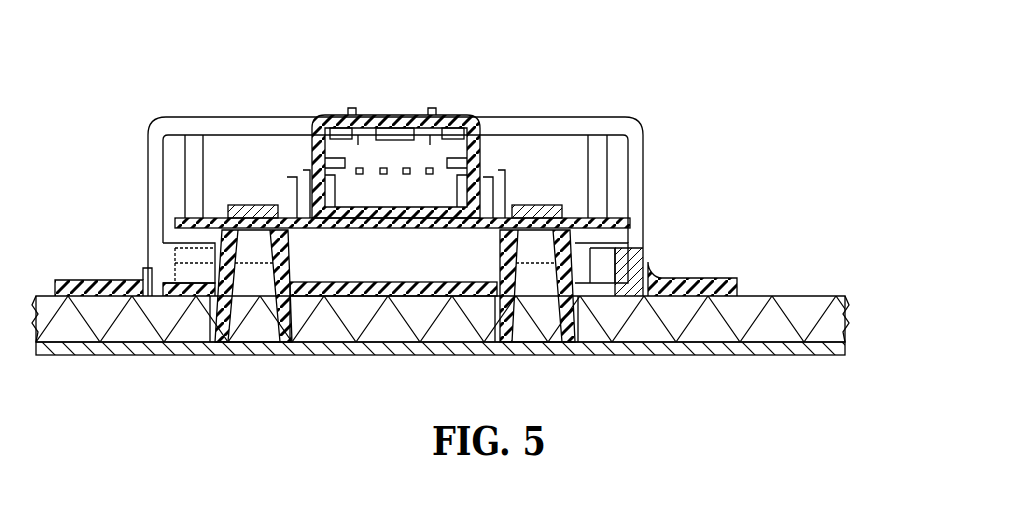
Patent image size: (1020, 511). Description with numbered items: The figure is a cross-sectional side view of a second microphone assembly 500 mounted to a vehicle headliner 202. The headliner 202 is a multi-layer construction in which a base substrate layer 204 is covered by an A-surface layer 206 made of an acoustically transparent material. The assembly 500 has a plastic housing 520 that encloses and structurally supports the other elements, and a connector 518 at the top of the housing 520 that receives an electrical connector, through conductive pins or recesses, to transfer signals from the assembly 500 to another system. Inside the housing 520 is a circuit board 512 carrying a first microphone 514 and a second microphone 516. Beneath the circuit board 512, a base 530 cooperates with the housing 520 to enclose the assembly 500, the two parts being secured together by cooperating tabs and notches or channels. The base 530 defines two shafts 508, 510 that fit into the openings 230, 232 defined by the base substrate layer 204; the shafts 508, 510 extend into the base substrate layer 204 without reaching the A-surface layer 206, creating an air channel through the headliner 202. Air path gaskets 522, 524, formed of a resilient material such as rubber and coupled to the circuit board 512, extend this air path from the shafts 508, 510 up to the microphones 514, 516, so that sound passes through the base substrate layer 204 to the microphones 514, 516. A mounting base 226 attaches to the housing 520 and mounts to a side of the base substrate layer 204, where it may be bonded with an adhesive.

The microphone assembly 500 is at (667, 65).
The vehicle headliner 202 is at (862, 355).
The base substrate layer 204 is at (777, 295).
The A-surface layer 206 is at (747, 355).
The mounting base 226 is at (108, 278).
The opening 230 is at (213, 335).
The opening 232 is at (495, 327).
The shaft 508 is at (252, 337).
The shaft 510 is at (538, 335).
The circuit board 512 is at (596, 214).
The first microphone 514 is at (537, 206).
The second microphone 516 is at (248, 206).
The connector 518 is at (395, 116).
The housing 520 is at (147, 156).
The air path gasket 522 is at (575, 252).
The air path gasket 524 is at (213, 245).
The base 530 is at (328, 286).